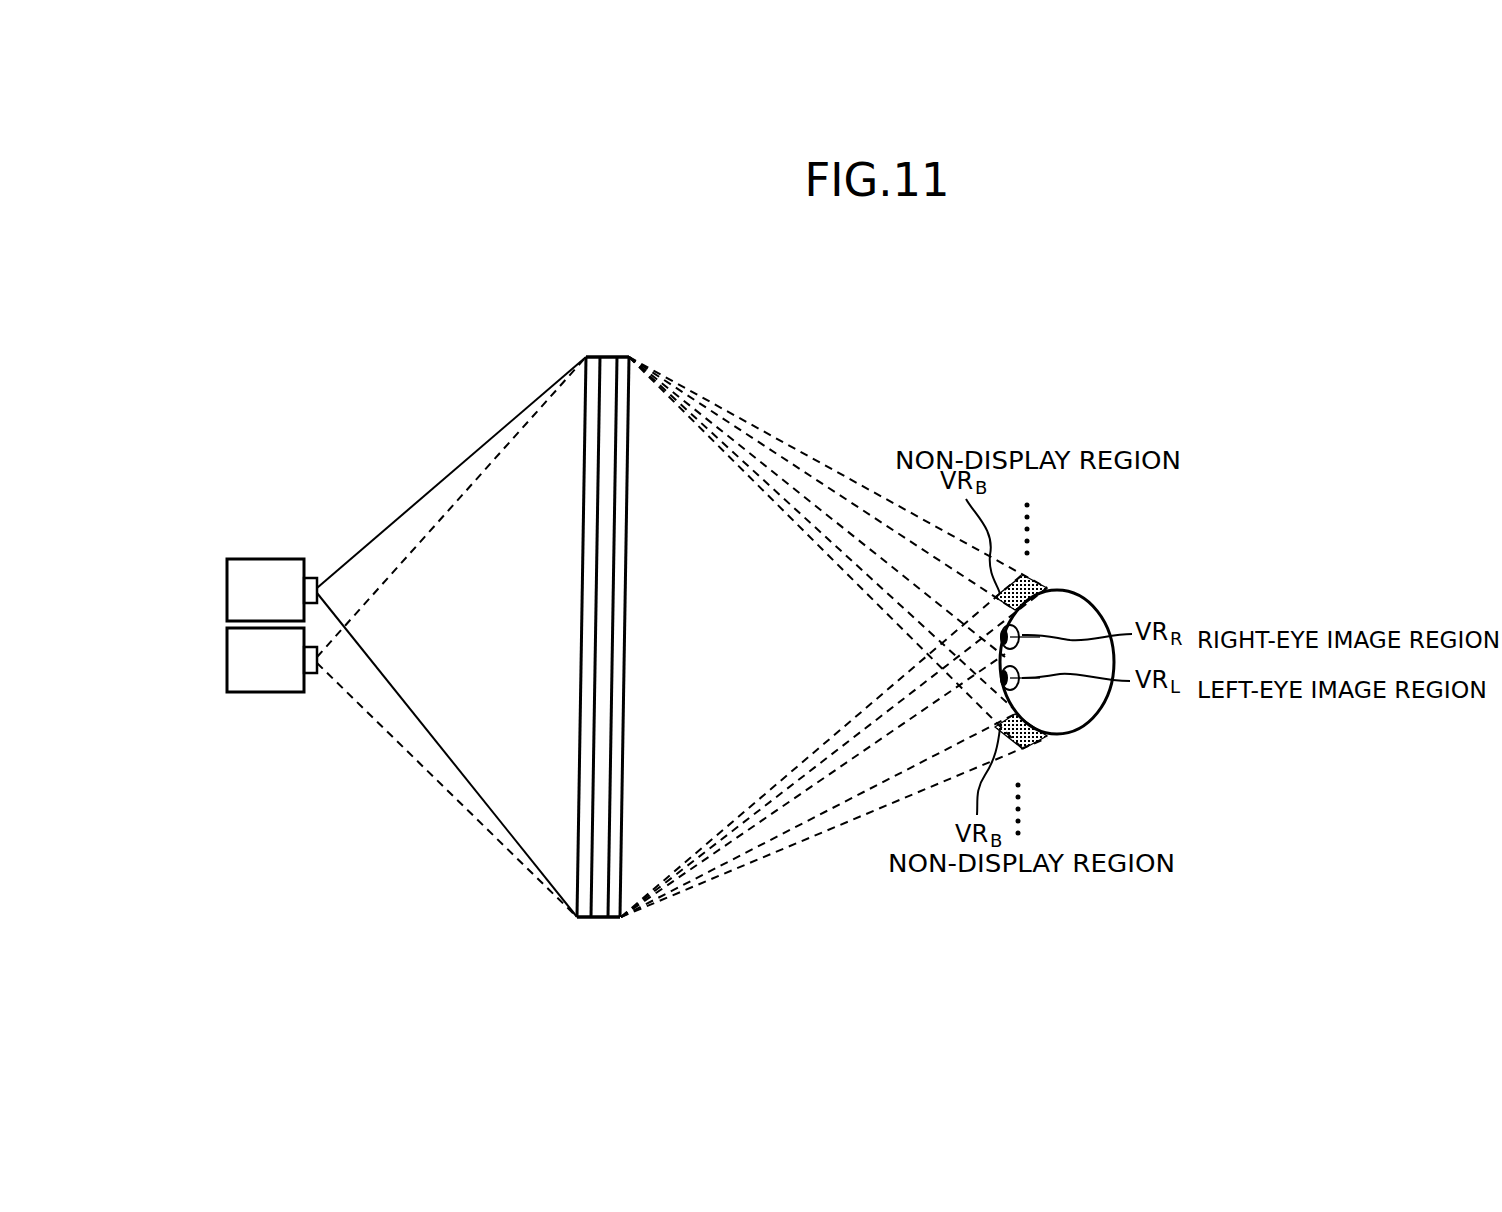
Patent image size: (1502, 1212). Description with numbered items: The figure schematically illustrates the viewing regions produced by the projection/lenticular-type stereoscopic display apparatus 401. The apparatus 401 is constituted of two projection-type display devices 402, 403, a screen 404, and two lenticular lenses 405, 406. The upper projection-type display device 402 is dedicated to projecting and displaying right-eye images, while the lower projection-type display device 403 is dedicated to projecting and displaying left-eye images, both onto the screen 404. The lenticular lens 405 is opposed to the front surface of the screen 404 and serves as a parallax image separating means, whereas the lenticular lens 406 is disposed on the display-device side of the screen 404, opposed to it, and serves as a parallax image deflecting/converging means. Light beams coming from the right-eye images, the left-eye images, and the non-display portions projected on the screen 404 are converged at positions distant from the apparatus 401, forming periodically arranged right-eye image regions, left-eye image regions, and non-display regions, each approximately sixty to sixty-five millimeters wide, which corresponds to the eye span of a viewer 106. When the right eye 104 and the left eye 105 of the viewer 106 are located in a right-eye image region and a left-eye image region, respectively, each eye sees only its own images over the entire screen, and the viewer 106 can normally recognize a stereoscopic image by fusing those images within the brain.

The stereoscopic display apparatus 401 is at (628, 336).
The projection-type display device 402 is at (259, 559).
The projection-type display device 403 is at (258, 692).
The screen 404 is at (599, 917).
The lenticular lens 405 is at (625, 735).
The lenticular lens 406 is at (582, 705).
The right eye 104 is at (1012, 622).
The left eye 105 is at (1012, 695).
The viewer 106 is at (1068, 756).